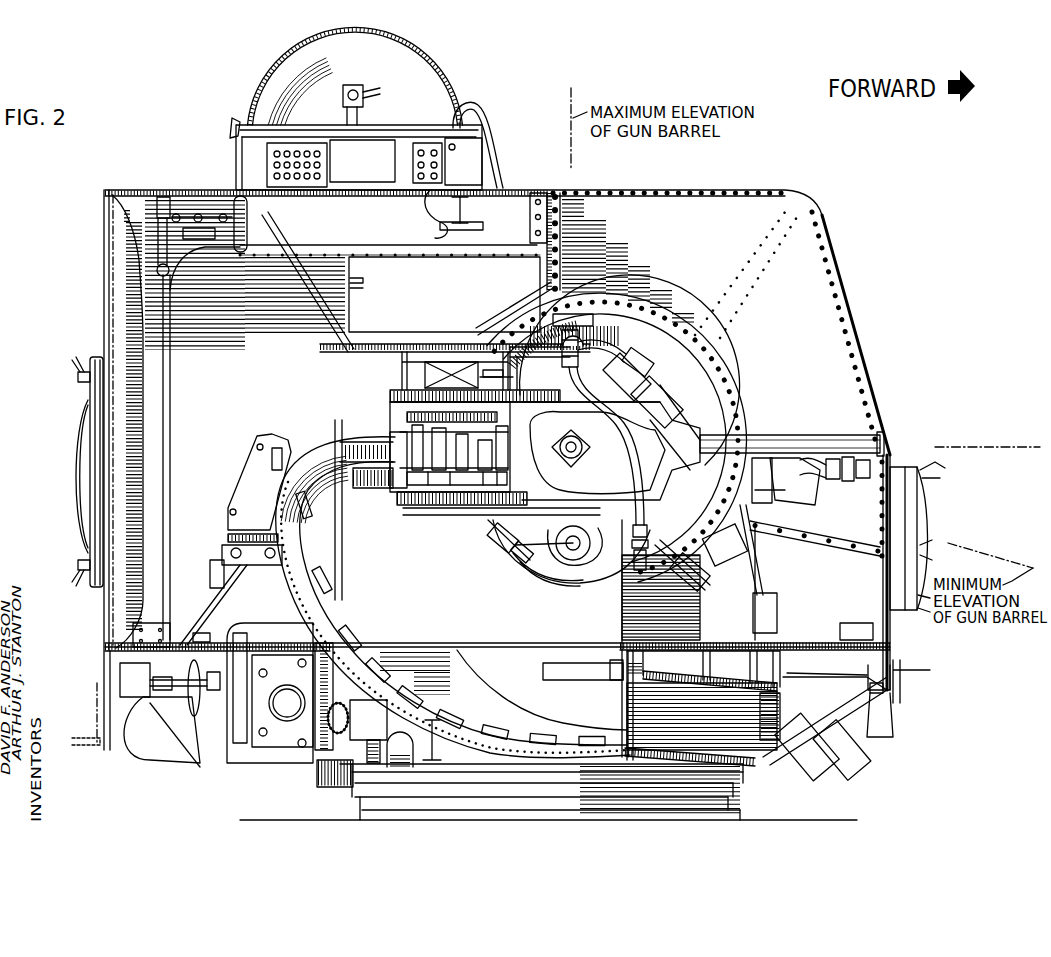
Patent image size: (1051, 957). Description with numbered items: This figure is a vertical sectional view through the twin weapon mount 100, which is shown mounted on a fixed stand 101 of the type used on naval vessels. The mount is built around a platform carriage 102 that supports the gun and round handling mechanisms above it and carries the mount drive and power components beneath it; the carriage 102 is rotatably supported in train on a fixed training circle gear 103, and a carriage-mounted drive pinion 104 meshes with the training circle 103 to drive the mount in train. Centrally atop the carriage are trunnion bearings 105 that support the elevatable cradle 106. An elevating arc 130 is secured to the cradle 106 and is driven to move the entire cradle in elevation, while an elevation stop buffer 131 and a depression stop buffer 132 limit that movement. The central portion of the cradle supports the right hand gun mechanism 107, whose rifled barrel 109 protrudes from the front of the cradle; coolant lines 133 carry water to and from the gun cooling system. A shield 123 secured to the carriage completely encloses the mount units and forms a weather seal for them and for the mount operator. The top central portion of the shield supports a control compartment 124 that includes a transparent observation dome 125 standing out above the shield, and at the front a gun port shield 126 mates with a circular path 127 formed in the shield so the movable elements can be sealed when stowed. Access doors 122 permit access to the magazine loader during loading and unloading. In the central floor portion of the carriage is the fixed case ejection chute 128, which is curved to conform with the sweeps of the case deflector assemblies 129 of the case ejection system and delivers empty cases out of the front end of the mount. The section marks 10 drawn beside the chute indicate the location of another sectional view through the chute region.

The section line 10- 10 is at (291, 515).
The gun mount turret 100 is at (842, 225).
The turret base 101 is at (360, 818).
The turret floor structure 102 is at (876, 663).
The roller 103 is at (365, 785).
The traversing mechanism 104 is at (314, 773).
The trunnion 105 is at (563, 449).
The cradle 106 is at (466, 520).
The right hand gun mechanism 107 is at (236, 392).
The right hand gun barrel 109 is at (812, 417).
The mantlet 122 is at (923, 500).
The shield 123 is at (118, 285).
The turret cab 124 is at (373, 227).
The dome 125 is at (437, 73).
The ring 126 is at (673, 363).
The ring plate 127 is at (687, 384).
The case chute 128 is at (520, 598).
The chute bracket 129 is at (318, 462).
The elevating mechanism 130 is at (500, 537).
The link 131 is at (705, 587).
The control box 132 is at (728, 548).
The hydraulic hose 133 is at (592, 441).